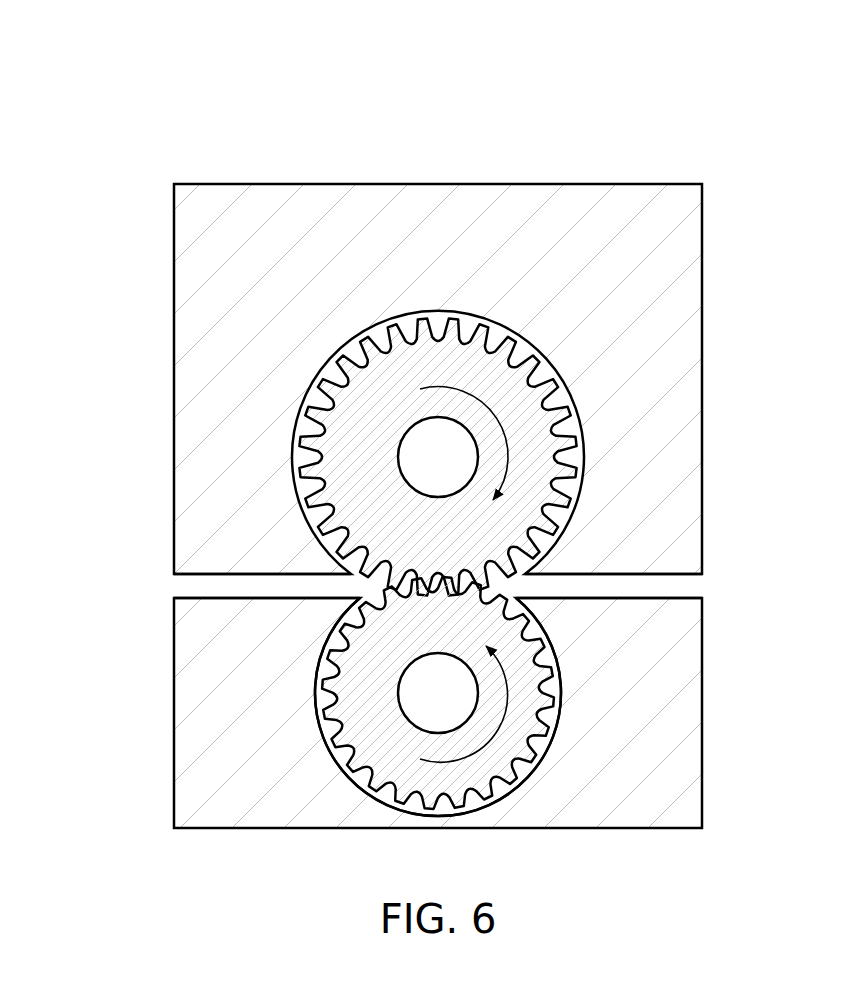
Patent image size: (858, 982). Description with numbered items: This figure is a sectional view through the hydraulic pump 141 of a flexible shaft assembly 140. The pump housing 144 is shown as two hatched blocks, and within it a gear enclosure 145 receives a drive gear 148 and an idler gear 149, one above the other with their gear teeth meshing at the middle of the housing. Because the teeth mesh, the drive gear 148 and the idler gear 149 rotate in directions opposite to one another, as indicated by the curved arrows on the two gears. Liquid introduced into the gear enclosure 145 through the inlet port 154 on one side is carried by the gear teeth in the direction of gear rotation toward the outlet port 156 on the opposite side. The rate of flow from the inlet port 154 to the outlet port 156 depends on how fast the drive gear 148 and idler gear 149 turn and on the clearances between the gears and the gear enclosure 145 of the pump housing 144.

The gear pump 140 is at (507, 482).
The hydraulic pump 141 is at (507, 379).
The pump housing 144 is at (562, 828).
The gear enclosure 145 is at (463, 813).
The drive gear 148 is at (433, 347).
The idler gear 149 is at (400, 790).
The inlet port 154 is at (173, 585).
The outlet port 156 is at (702, 586).